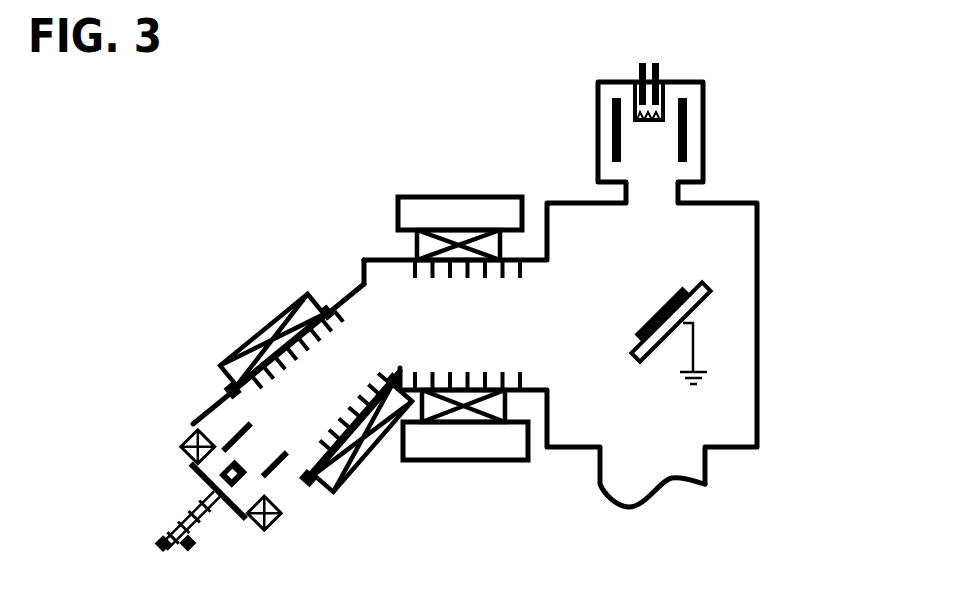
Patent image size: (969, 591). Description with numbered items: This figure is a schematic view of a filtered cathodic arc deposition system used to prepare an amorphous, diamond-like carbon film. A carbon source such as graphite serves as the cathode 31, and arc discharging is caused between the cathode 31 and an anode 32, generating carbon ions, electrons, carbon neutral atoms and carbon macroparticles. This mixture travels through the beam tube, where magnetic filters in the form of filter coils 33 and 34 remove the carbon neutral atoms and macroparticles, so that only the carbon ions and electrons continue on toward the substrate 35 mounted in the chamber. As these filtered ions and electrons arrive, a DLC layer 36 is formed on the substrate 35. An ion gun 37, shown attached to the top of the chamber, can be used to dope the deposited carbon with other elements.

The cathode 31 is at (248, 478).
The anode 32 is at (222, 432).
The filter coil 33 is at (282, 320).
The filter coil 34 is at (412, 255).
The substrate 35 is at (684, 288).
The DLC layer 36 is at (645, 318).
The ion gun 37 is at (600, 155).